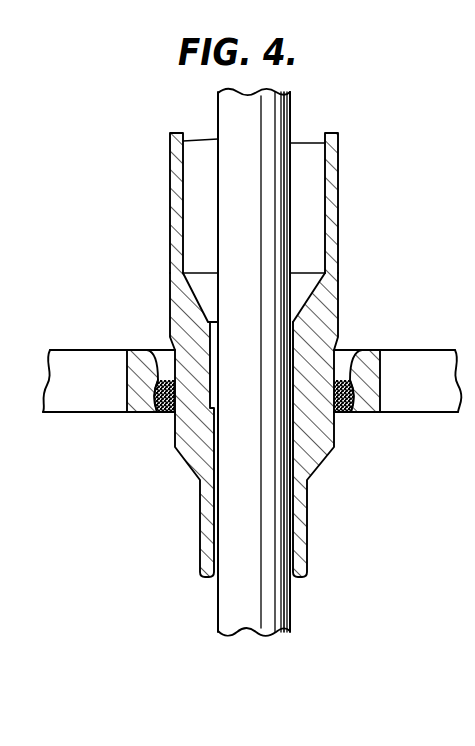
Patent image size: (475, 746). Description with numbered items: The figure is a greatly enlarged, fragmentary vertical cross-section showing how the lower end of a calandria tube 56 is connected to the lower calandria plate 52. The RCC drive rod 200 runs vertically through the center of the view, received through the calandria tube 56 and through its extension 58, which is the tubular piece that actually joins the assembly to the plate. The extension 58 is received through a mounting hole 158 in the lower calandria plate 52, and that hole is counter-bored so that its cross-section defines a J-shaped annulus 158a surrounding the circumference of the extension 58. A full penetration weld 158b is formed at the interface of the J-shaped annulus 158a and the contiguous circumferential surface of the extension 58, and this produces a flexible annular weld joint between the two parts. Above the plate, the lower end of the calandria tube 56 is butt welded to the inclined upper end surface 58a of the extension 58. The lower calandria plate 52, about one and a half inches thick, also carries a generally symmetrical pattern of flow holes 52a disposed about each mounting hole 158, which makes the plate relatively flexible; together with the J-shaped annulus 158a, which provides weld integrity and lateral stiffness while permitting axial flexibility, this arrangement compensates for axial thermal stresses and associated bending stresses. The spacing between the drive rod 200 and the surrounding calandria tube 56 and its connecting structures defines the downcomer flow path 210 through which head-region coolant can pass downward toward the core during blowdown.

The RCC drive rod 200 is at (290, 128).
The downcomer flow path 210 is at (311, 160).
The calandria tube 56 is at (336, 182).
The extension 58 is at (335, 437).
The inclined upper end surface 58a is at (308, 298).
The lower calandria plate 52 is at (133, 350).
The flow hole 52a is at (67, 367).
The mounting hole 158 is at (178, 397).
The J-shaped annulus 158a is at (355, 362).
The full penetration weld 158b is at (340, 413).